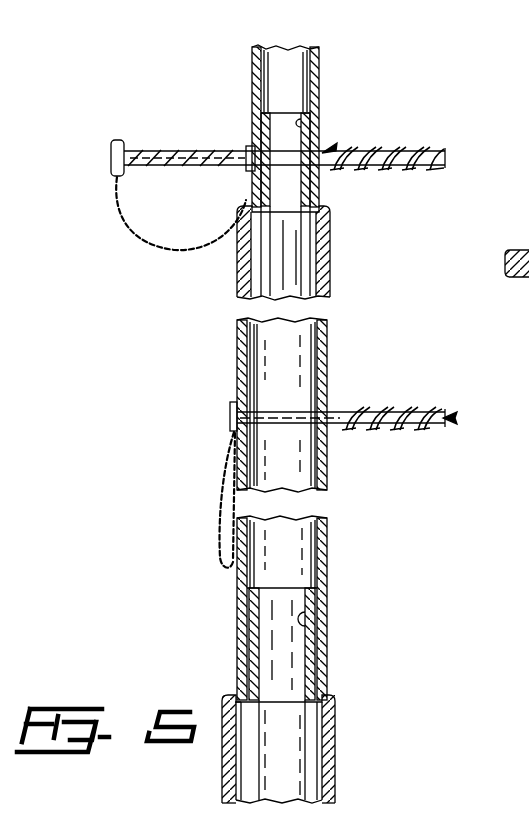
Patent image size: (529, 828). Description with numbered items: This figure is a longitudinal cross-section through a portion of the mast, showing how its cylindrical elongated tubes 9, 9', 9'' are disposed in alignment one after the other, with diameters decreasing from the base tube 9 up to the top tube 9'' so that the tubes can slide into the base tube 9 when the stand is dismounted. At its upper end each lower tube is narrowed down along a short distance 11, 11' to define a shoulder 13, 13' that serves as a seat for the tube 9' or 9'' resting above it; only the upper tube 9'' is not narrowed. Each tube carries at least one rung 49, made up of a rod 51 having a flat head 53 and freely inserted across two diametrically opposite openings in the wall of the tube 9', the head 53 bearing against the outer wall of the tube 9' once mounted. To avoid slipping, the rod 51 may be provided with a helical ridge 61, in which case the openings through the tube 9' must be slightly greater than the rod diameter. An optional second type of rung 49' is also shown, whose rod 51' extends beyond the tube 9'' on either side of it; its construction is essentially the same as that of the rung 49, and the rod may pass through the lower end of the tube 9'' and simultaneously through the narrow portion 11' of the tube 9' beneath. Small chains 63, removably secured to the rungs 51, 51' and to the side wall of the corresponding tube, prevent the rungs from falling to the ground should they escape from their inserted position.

The base tube 9 is at (321, 659).
The tube 9' is at (302, 405).
The top tube 9'' is at (322, 126).
The narrowed portion 11 is at (322, 694).
The narrowed portion 11' is at (328, 194).
The shoulder 13 is at (306, 729).
The shoulder 13' is at (320, 245).
The rung 49 is at (473, 403).
The rung 49' is at (417, 124).
The rod 51 is at (325, 388).
The rod 51' is at (287, 119).
The flat head 53 is at (230, 413).
The helical ridge 61 is at (400, 410).
The small chain 63 is at (158, 252).